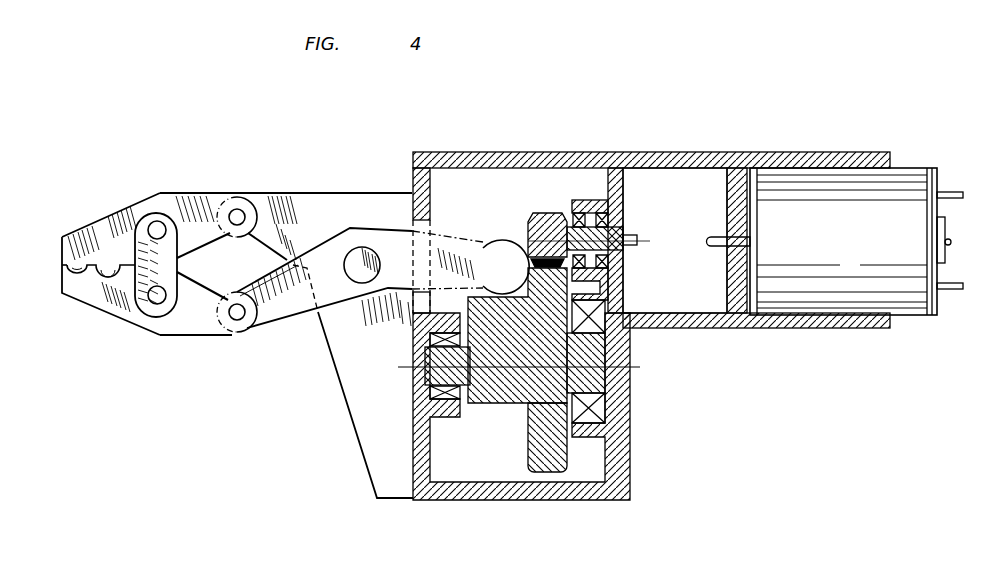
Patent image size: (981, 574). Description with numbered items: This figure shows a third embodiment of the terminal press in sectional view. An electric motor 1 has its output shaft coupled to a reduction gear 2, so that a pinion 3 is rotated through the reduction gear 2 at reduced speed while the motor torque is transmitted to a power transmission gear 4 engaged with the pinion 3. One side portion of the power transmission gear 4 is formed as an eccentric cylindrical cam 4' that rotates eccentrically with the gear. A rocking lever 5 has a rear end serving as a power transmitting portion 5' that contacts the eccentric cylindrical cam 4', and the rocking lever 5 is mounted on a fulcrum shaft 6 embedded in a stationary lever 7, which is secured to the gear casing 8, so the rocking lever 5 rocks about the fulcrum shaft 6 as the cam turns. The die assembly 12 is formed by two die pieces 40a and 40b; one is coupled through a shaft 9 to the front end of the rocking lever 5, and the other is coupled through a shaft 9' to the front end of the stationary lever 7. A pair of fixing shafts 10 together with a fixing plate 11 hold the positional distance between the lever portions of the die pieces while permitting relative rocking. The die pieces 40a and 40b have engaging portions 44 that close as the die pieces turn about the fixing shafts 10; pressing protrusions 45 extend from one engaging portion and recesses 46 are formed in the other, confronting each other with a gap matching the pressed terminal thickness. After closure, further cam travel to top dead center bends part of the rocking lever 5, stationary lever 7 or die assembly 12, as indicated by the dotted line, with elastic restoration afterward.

The electric motor 1 is at (837, 213).
The reduction gear 2 is at (672, 200).
The pinion 3 is at (546, 226).
The power transmission gear 4 is at (527, 437).
The eccentric cylindrical cam 4' is at (517, 351).
The rocking lever 5 is at (360, 236).
The power transmitting portion 5' is at (483, 246).
The fulcrum shaft 6 is at (350, 247).
The stationary lever 7 is at (312, 205).
The gear casing 8 is at (465, 492).
The shaft 9 is at (208, 322).
The shaft 9' is at (217, 202).
The fixing shafts 10 is at (156, 226).
The fixing plate 11 is at (137, 250).
The die assembly 12 is at (110, 212).
The die piece 40a is at (95, 223).
The die piece 40b is at (113, 318).
The engaging portions 44 is at (63, 256).
The pressing protrusions 45 is at (110, 263).
The recesses 46 is at (112, 272).